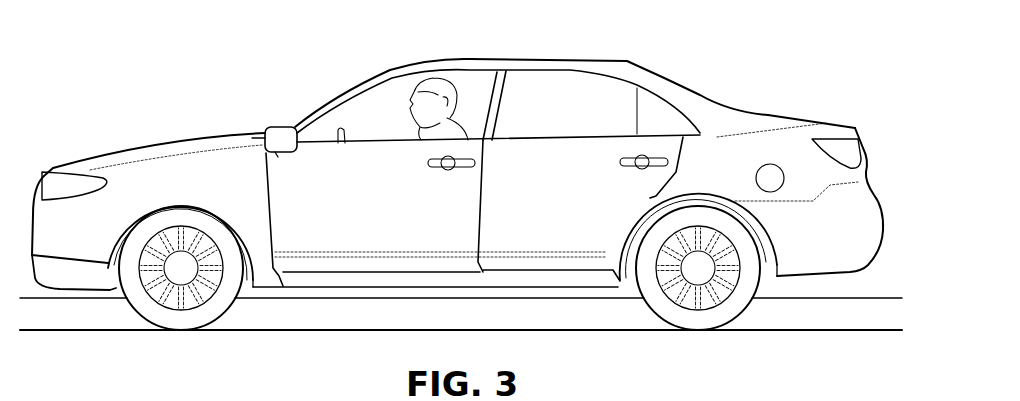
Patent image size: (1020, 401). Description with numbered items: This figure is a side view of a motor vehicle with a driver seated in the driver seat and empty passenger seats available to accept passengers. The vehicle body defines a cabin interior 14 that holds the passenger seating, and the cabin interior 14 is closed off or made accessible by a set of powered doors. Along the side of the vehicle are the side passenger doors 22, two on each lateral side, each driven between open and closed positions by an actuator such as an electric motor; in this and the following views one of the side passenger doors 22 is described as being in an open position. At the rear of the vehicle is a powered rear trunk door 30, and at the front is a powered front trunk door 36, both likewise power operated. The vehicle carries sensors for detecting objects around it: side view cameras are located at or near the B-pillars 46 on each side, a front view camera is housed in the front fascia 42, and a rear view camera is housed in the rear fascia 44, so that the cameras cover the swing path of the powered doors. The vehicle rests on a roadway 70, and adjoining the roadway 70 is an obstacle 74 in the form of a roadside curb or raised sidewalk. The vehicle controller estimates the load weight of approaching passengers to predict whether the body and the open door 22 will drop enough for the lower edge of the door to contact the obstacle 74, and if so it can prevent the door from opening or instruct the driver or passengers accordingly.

The cabin interior 14 is at (332, 133).
The side passenger door 22 is at (365, 178).
The rear trunk door 30 is at (840, 120).
The front trunk door 36 is at (88, 158).
The front fascia 42 is at (30, 267).
The rear fascia 44 is at (880, 240).
The B-pillar 46 is at (493, 85).
The roadway 70 is at (822, 329).
The obstacle 74 is at (865, 298).